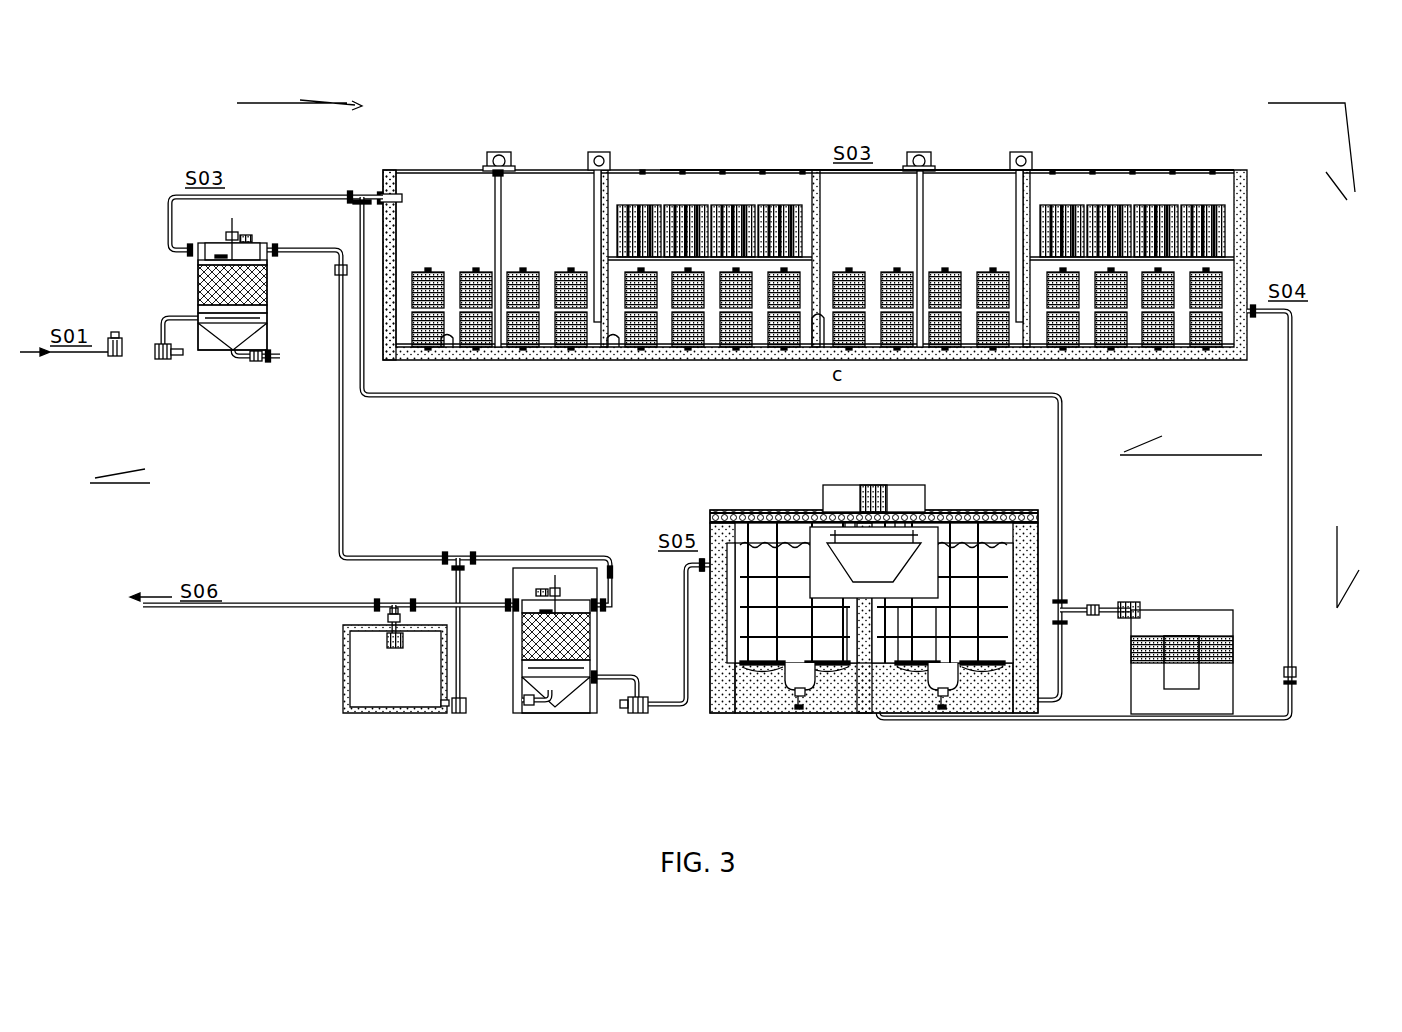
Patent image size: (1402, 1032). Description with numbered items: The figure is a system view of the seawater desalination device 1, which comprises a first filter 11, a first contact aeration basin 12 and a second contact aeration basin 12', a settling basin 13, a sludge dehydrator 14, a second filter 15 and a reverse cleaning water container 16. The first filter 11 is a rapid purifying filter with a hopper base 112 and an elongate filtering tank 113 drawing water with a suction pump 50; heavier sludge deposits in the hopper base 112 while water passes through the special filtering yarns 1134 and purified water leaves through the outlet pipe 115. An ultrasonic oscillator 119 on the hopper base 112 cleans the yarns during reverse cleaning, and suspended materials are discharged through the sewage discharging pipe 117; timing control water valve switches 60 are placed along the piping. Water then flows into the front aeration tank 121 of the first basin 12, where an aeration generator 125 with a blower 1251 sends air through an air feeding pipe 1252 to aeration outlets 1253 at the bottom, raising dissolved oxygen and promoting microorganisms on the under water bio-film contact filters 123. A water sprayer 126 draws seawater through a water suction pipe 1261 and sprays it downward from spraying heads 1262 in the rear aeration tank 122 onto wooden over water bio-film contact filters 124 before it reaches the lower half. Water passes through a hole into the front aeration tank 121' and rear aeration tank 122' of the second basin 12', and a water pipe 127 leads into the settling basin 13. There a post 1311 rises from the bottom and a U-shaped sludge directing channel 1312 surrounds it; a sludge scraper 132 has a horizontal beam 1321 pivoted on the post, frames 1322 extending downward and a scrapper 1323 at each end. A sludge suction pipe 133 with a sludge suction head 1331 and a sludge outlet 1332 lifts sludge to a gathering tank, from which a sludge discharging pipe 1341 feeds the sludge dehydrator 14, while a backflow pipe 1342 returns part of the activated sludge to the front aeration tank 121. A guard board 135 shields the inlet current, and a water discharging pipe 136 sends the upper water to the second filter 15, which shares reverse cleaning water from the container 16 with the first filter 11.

The seawater desalination device 1 is at (394, 118).
The first filter 11 is at (197, 285).
The hopper base 112 is at (222, 338).
The filtering tank 113 is at (197, 280).
The special filtering yarns 1134 is at (197, 296).
The outlet pipe 115 is at (168, 212).
The sewage discharging pipe 117 is at (275, 358).
The ultrasonic oscillator 119 is at (162, 356).
The first contact aeration basin 12 is at (815, 235).
The second contact aeration basin 12' is at (998, 229).
The front aeration tank 121 is at (369, 238).
The front aeration tank 121' is at (879, 231).
The rear aeration tank 122 is at (739, 225).
The rear aeration tank 122' is at (1132, 182).
The under water bio-film contact filter 123 is at (478, 350).
The over water bio-film contact filter 124 is at (683, 210).
The aeration generator 125 is at (519, 152).
The blower 1251 is at (490, 158).
The air feeding pipe 1252 is at (501, 208).
The aeration outlets 1253 is at (447, 352).
The water sprayer 126 is at (608, 165).
The water suction pipe 1261 is at (597, 238).
The spraying heads 1262 is at (742, 180).
The water pipe 127 is at (1293, 324).
The settling basin 13 is at (842, 702).
The post 1311 is at (946, 530).
The U-shaped sludge directing channel 1312 is at (799, 708).
The sludge scraper 132 is at (904, 485).
The horizontal beam 1321 is at (772, 520).
The frames 1322 is at (782, 638).
The scrapper 1323 is at (742, 668).
The sludge suction pipe 133 is at (760, 610).
The sludge suction head 1331 is at (792, 692).
The sludge outlet 1332 is at (880, 515).
The sludge discharging pipe 1341 is at (1045, 722).
The backflow pipe 1342 is at (1062, 496).
The guard board 135 is at (735, 596).
The water discharging pipe 136 is at (700, 568).
The sludge dehydrator 14 is at (1212, 614).
The second filter 15 is at (522, 640).
The reverse cleaning water container 16 is at (352, 676).
The suction pump 50 is at (108, 354).
The timing control water valve switch 60 is at (338, 273).